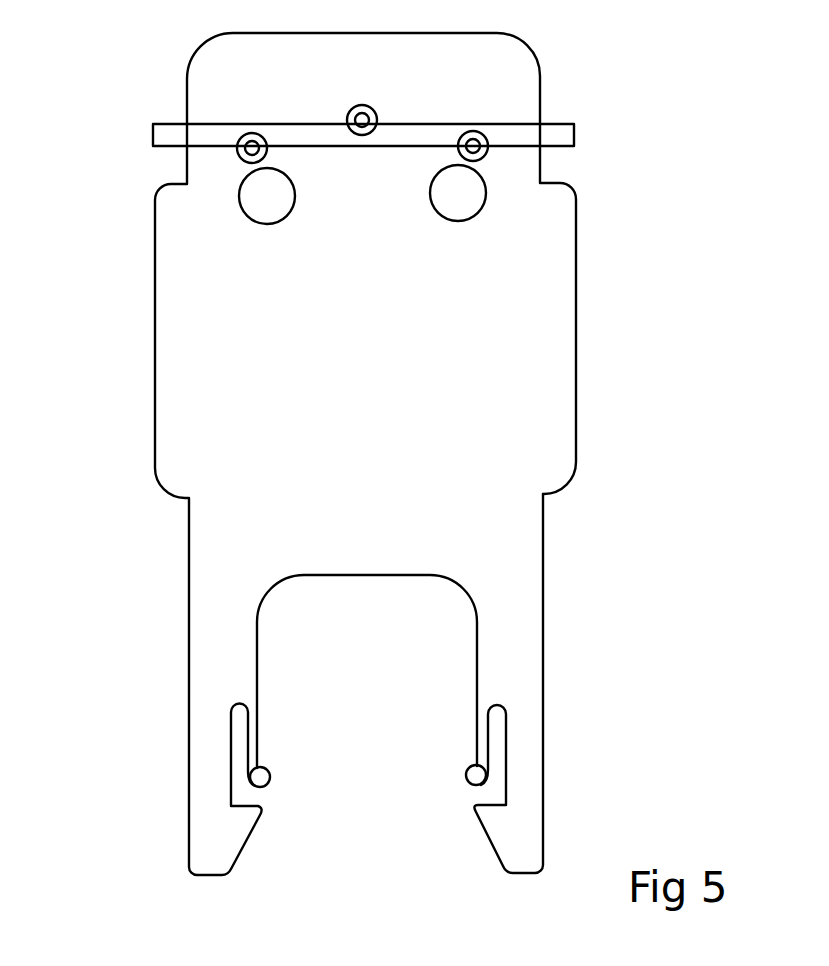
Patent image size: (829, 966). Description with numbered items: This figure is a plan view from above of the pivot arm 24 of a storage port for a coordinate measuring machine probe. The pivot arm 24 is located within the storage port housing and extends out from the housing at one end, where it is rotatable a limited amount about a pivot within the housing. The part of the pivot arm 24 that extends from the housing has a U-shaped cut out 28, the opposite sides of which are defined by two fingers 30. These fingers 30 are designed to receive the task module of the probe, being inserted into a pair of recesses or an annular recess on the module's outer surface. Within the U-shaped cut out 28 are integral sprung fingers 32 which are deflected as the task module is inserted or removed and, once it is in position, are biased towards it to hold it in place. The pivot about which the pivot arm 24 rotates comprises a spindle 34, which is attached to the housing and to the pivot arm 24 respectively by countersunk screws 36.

The pivot arm 24 is at (228, 362).
The U-shaped cut out 28 is at (323, 670).
The fingers 30 is at (206, 833).
The sprung fingers 32 is at (265, 785).
The spindle 34 is at (558, 128).
The countersunk screws 36 is at (350, 112).